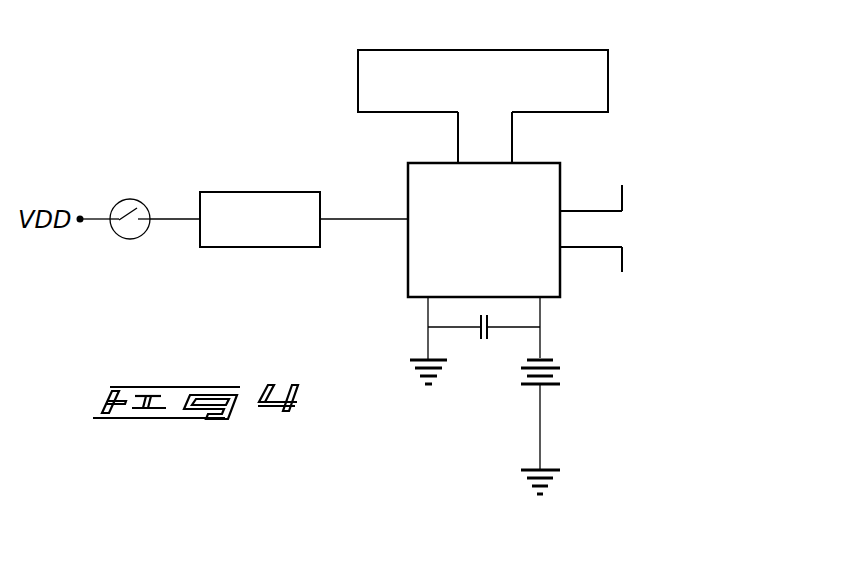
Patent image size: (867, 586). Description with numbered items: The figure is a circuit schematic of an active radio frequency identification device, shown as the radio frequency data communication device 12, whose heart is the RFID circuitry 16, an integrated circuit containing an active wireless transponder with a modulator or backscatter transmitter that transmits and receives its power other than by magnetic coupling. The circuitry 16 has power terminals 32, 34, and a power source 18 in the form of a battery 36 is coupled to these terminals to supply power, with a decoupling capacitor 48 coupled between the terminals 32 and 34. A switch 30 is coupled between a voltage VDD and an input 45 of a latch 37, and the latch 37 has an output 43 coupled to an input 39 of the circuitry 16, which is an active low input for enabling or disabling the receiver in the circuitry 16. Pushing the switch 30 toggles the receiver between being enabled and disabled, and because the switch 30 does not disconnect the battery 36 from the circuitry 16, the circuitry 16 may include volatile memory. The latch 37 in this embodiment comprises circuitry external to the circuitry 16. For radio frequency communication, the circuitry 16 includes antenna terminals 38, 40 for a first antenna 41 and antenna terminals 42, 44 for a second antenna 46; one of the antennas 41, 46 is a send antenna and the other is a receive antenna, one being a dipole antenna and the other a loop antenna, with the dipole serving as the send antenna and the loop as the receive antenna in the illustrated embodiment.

The radio frequency data communication device 12 is at (701, 78).
The RFID circuitry 16 is at (408, 264).
The power source 18 is at (586, 364).
The switch 30 is at (130, 198).
The power terminal 32 is at (428, 298).
The power terminal 34 is at (540, 298).
The battery 36 is at (558, 382).
The latch 37 is at (245, 192).
The antenna terminal 38 is at (458, 161).
The input 39 is at (408, 212).
The antenna terminal 40 is at (512, 161).
The first antenna 41 is at (402, 49).
The antenna terminal 42 is at (560, 210).
The output 43 is at (322, 222).
The antenna terminal 44 is at (560, 248).
The input 45 is at (200, 218).
The second antenna 46 is at (627, 227).
The decoupling capacitor 48 is at (481, 333).